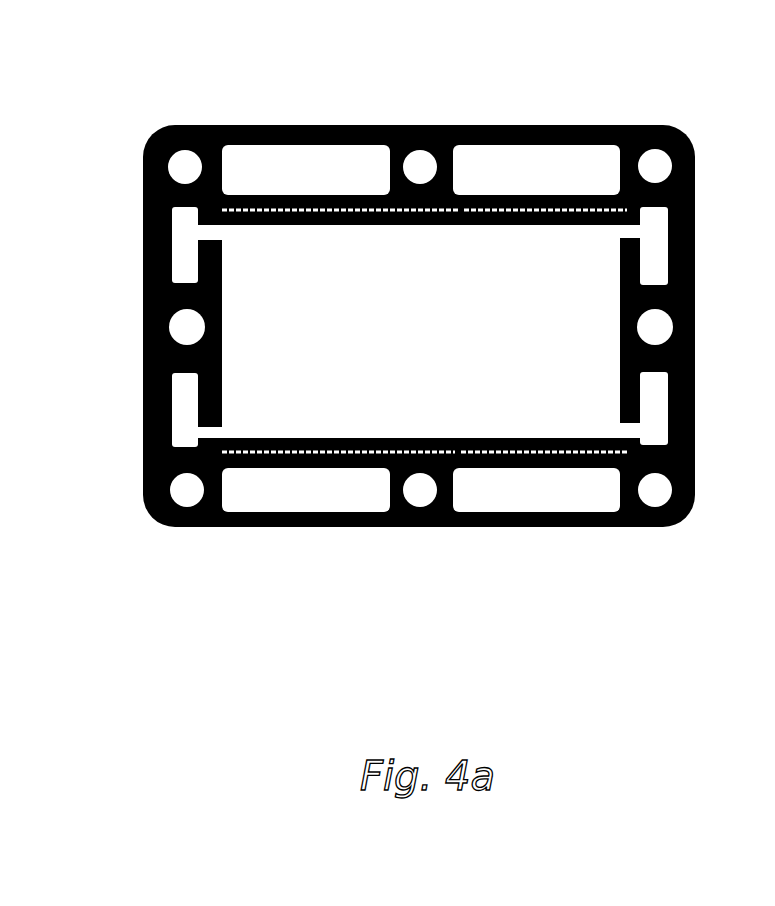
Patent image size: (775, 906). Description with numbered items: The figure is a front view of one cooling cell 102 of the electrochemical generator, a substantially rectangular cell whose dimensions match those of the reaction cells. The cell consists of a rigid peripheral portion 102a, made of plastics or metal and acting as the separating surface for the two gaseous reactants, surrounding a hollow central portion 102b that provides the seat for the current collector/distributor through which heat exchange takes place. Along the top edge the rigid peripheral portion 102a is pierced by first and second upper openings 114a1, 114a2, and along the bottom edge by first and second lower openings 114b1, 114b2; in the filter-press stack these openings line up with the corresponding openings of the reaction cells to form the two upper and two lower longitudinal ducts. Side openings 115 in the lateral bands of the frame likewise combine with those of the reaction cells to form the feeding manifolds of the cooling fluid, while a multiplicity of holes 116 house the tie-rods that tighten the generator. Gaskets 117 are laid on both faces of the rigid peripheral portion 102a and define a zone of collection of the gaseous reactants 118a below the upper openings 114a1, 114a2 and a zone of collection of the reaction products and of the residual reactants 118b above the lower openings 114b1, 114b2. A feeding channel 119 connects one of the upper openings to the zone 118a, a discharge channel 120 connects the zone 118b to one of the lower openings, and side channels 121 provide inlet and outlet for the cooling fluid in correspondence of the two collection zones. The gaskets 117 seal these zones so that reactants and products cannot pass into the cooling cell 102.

The cooling cell 102 is at (622, 95).
The rigid peripheral portion 102a is at (697, 157).
The hollow central portion 102b is at (553, 410).
The first upper opening 114a1 is at (280, 173).
The second upper opening 114a2 is at (488, 170).
The first lower opening 114b1 is at (315, 498).
The second lower opening 114b2 is at (538, 498).
The side openings 115 is at (774, 470).
The holes 116 is at (429, 374).
The gaskets 117 is at (650, 122).
The zone of collection of the gaseous reactants 118a is at (660, 202).
The zone of collection of the reaction products and of the residual reactants 118b is at (642, 461).
The feeding channel 119 is at (463, 212).
The discharge channel 120 is at (458, 455).
The side channels 121 is at (210, 232).